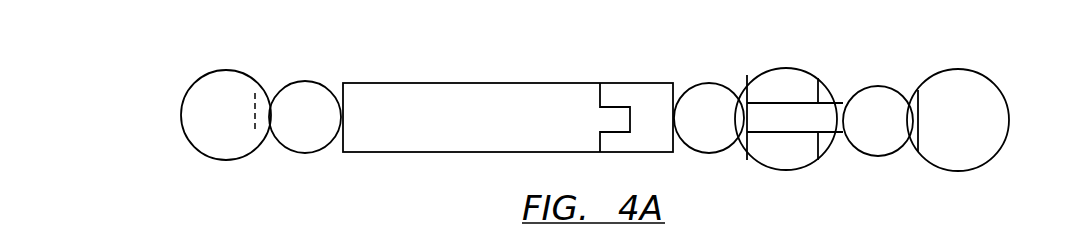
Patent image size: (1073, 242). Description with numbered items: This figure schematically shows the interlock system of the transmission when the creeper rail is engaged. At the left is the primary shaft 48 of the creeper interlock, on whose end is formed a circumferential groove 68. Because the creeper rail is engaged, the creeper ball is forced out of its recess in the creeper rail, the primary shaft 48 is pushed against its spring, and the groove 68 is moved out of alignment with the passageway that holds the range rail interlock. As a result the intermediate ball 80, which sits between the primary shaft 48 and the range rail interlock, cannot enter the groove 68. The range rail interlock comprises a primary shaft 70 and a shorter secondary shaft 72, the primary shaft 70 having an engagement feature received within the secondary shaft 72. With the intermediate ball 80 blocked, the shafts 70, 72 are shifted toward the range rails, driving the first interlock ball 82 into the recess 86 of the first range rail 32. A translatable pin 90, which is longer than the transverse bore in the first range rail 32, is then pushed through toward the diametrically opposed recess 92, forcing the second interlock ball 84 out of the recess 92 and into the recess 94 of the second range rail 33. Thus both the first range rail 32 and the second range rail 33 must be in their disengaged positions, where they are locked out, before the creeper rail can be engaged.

The primary shaft 48 is at (213, 107).
The groove 68 is at (251, 125).
The intermediate ball 80 is at (313, 105).
The primary shaft 70 is at (500, 107).
The secondary shaft 72 is at (645, 108).
The first interlock ball 82 is at (698, 108).
The first range rail 32 is at (777, 85).
The translatable pin 90 is at (788, 118).
The recess 86 is at (742, 132).
The recess 92 is at (820, 147).
The second interlock ball 84 is at (880, 108).
The recess 94 is at (912, 118).
The second range rail 33 is at (992, 125).